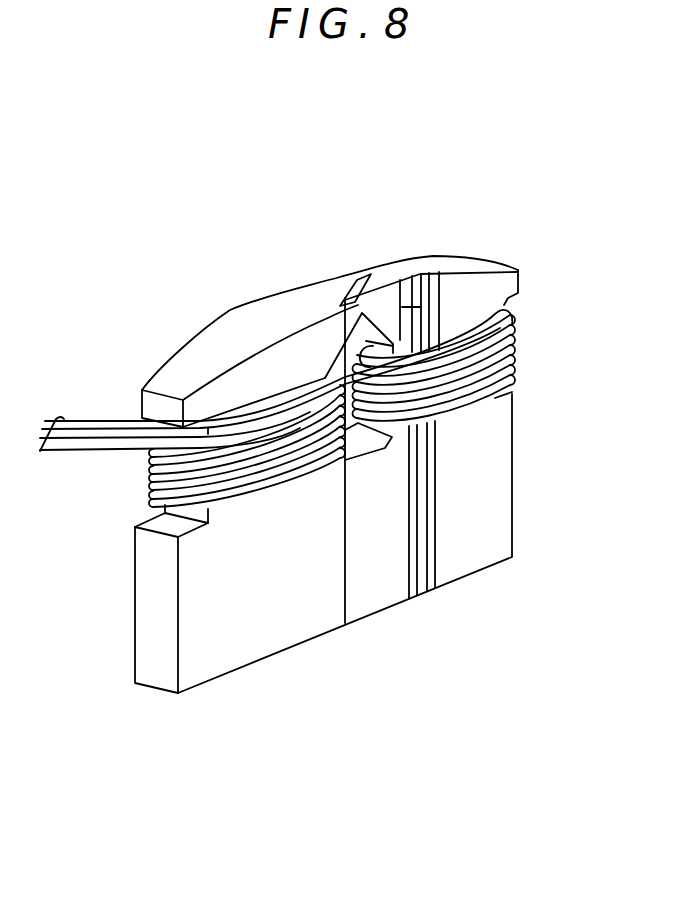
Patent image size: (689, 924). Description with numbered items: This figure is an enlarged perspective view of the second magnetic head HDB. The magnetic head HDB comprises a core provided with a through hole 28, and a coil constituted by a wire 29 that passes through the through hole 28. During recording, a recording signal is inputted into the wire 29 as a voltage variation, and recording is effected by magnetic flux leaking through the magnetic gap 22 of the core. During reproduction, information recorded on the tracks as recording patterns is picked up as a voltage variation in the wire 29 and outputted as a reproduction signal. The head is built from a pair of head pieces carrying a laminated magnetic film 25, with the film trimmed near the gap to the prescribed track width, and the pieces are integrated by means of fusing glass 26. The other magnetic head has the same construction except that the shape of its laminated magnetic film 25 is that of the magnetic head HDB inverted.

The magnetic gap 22 is at (368, 275).
The laminated magnetic film 25 is at (313, 285).
The fusing glass 26 is at (338, 270).
The through hole 28 is at (247, 313).
The wire 29 is at (83, 427).
The magnetic head HDB is at (548, 296).